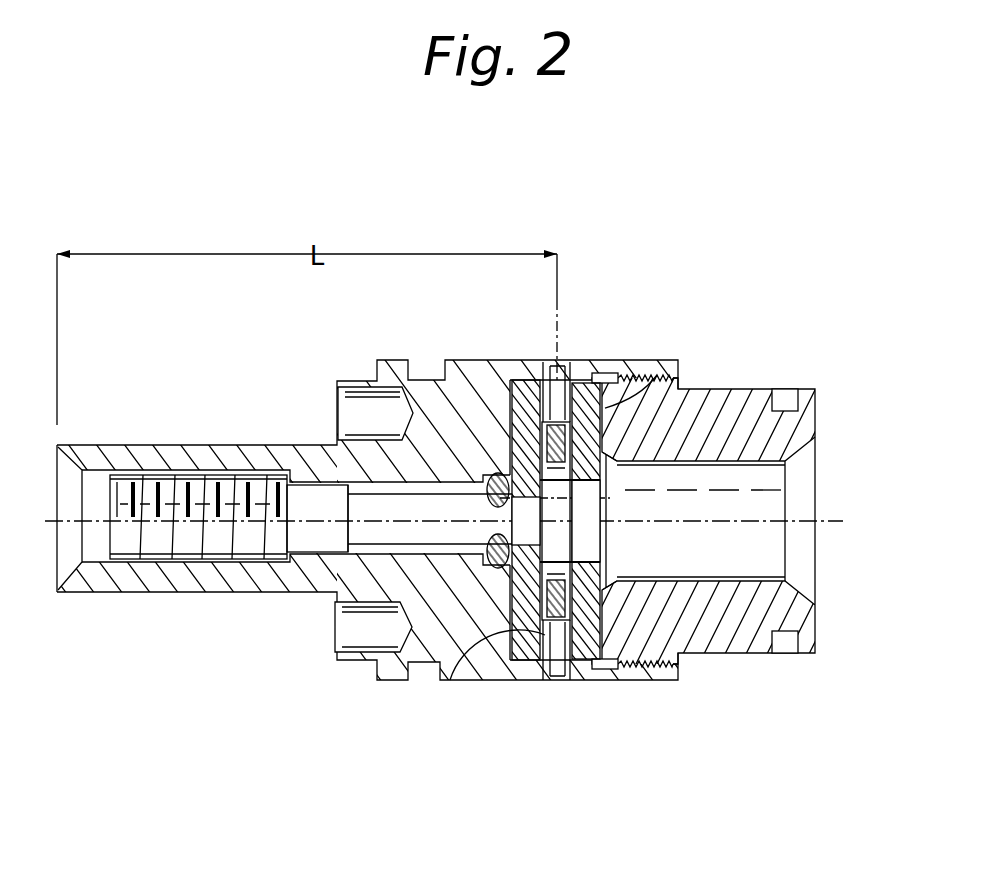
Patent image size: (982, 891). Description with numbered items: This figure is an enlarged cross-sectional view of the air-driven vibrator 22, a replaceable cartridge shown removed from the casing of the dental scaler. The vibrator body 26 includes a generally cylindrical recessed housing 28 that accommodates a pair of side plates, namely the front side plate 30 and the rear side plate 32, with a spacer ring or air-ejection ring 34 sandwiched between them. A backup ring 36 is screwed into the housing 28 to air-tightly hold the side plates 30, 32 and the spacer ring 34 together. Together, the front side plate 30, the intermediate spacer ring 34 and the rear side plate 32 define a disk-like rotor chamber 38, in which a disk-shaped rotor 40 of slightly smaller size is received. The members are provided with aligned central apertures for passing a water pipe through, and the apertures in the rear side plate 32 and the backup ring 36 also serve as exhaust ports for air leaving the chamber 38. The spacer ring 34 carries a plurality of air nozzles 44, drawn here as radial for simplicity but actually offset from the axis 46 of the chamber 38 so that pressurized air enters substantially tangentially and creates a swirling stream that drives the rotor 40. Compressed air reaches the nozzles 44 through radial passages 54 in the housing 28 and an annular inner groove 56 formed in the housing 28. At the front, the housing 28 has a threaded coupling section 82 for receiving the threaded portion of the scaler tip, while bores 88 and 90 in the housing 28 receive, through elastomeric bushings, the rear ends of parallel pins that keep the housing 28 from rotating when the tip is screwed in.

The air-driven vibrator 22 is at (688, 258).
The vibrator body 26 is at (492, 692).
The recessed housing 28 is at (463, 362).
The front side plate 30 is at (518, 665).
The rear side plate 32 is at (580, 660).
The spacer ring or air-ejection ring 34 is at (657, 375).
The backup ring 36 is at (743, 638).
The rotor chamber 38 is at (450, 680).
The rotor 40 is at (617, 573).
The air nozzles 44 is at (547, 362).
The axis 46 is at (830, 518).
The radial passages 54 is at (563, 362).
The annular inner groove 56 is at (573, 362).
The threaded coupling section 82 is at (203, 580).
The bore 88 is at (347, 638).
The bore 90 is at (340, 405).